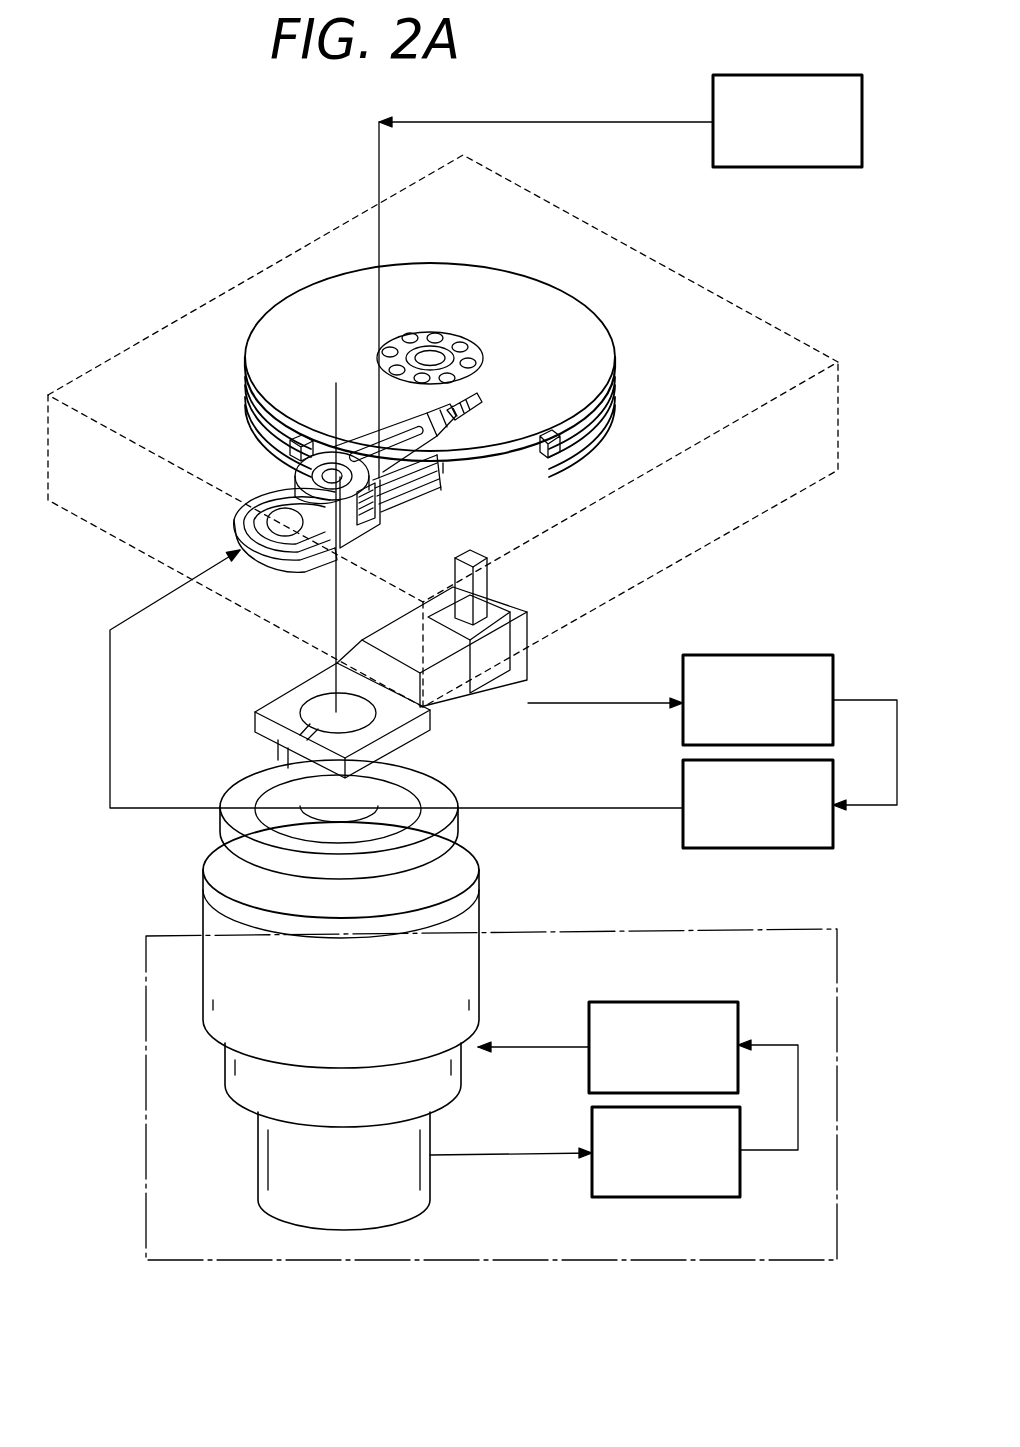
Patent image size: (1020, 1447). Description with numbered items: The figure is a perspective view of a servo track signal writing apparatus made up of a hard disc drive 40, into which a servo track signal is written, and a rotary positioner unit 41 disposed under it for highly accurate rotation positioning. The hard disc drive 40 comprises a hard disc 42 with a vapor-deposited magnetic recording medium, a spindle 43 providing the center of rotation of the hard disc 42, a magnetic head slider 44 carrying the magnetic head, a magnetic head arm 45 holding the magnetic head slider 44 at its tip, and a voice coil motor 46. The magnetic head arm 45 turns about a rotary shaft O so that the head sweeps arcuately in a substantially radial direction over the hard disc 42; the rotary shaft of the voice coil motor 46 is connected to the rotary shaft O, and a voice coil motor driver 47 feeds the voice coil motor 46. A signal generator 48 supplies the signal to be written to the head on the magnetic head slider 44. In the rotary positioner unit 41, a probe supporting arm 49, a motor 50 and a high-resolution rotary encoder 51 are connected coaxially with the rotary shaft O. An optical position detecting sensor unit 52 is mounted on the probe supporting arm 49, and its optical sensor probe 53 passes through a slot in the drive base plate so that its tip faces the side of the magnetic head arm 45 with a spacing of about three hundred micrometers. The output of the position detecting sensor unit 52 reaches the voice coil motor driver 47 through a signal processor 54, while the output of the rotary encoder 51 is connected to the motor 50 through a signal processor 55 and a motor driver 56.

The hard disc drive 40 is at (250, 281).
The rotary positioner unit 41 is at (160, 943).
The hard disc 42 is at (450, 268).
The spindle 43 is at (427, 353).
The magnetic head slider 44 is at (483, 393).
The magnetic head arm 45 is at (440, 470).
The voice coil motor 46 is at (250, 525).
The voice coil motor driver 47 is at (683, 835).
The signal generator 48 is at (795, 167).
The probe supporting arm 49 is at (448, 725).
The motor 50 is at (478, 918).
The rotary encoder 51 is at (285, 1200).
The position detecting sensor unit 52 is at (503, 648).
The optical sensor probe 53 is at (480, 585).
The signal processor 54 is at (790, 655).
The signal processor 55 is at (592, 1183).
The motor driver 56 is at (710, 1002).
The rotary shaft O is at (323, 388).